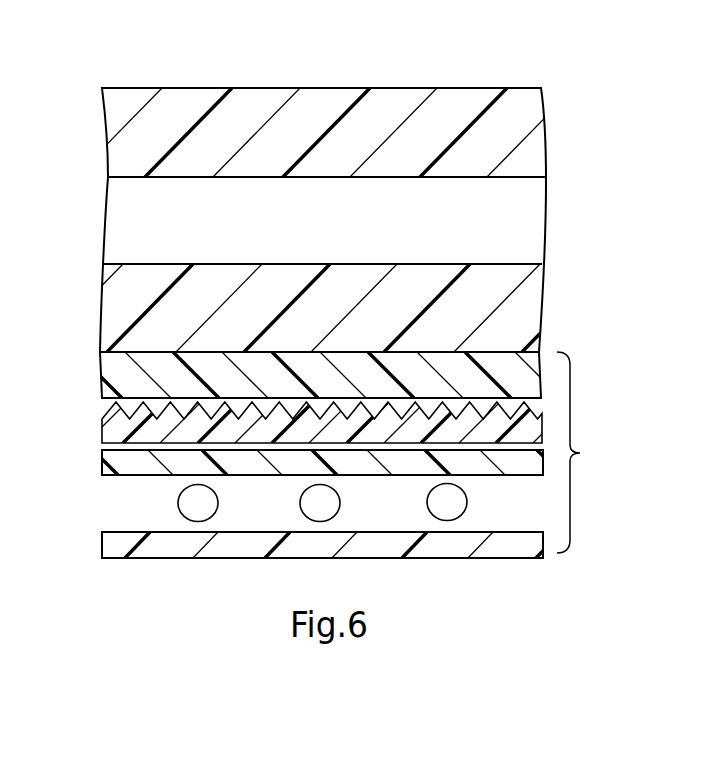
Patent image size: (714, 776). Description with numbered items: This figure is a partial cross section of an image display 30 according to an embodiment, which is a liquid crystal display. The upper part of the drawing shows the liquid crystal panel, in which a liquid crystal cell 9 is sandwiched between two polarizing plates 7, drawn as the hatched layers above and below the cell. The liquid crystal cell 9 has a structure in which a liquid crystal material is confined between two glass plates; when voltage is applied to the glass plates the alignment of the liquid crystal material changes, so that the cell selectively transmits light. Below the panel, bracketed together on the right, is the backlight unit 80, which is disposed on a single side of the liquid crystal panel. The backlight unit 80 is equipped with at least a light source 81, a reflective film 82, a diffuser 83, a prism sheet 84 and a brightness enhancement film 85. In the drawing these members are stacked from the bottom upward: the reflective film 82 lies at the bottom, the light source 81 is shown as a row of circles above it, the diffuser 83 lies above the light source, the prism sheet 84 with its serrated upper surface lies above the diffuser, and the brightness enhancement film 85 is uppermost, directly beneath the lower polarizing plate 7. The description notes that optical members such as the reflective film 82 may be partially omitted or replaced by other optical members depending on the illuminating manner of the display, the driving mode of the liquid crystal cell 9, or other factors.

The image display 30 is at (486, 70).
The polarizing plate 7 is at (535, 149).
The liquid crystal cell 9 is at (533, 217).
The backlight unit 80 is at (329, 456).
The brightness enhancement film 85 is at (104, 374).
The prism sheet 84 is at (104, 426).
The diffuser 83 is at (104, 462).
The light source 81 is at (178, 500).
The reflective film 82 is at (104, 541).